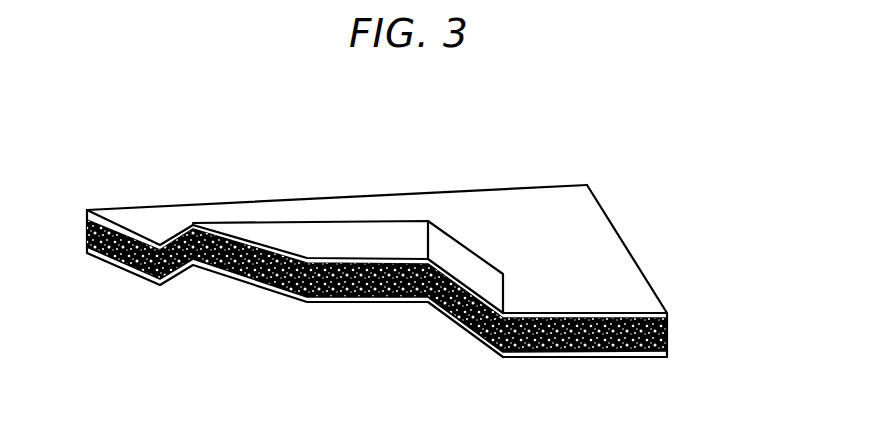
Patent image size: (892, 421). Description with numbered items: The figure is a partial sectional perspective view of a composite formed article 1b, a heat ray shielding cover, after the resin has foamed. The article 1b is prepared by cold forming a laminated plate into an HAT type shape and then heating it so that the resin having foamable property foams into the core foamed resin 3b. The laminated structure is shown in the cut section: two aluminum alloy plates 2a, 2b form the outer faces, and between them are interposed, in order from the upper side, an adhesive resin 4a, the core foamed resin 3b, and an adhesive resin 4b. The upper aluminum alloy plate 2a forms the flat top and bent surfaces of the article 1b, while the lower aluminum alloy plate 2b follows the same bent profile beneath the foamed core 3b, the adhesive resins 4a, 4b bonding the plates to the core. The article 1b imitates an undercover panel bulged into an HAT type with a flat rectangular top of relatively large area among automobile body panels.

The composite formed article 1b is at (326, 183).
The aluminum alloy plate 2a is at (570, 206).
The aluminum alloy plate 2b is at (625, 353).
The core foamed resin 3b is at (538, 336).
The adhesive resin 4a is at (648, 316).
The adhesive resin 4b is at (648, 353).